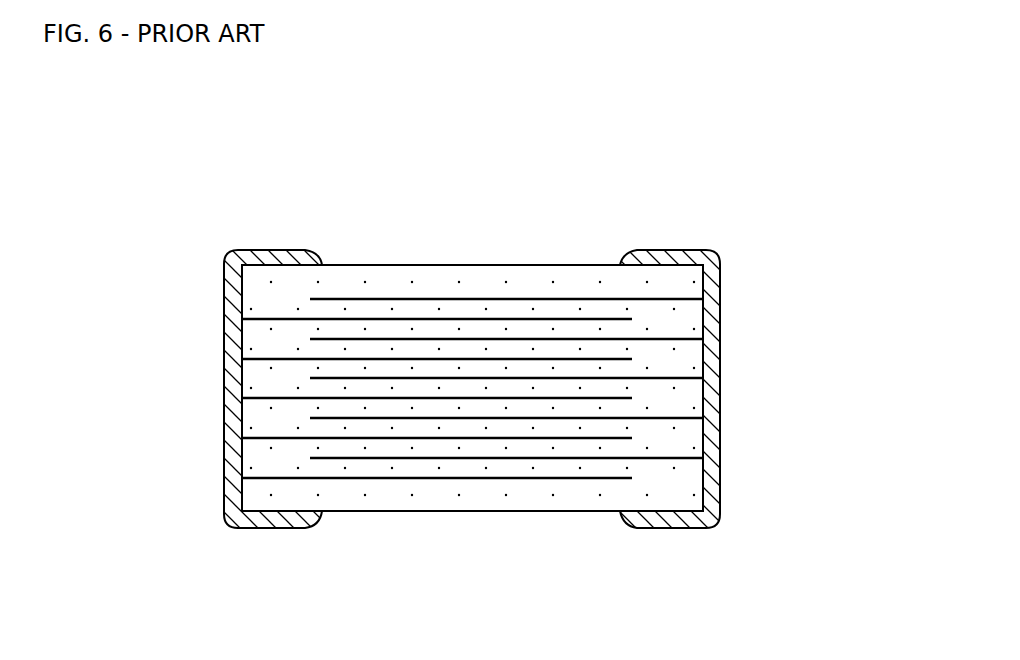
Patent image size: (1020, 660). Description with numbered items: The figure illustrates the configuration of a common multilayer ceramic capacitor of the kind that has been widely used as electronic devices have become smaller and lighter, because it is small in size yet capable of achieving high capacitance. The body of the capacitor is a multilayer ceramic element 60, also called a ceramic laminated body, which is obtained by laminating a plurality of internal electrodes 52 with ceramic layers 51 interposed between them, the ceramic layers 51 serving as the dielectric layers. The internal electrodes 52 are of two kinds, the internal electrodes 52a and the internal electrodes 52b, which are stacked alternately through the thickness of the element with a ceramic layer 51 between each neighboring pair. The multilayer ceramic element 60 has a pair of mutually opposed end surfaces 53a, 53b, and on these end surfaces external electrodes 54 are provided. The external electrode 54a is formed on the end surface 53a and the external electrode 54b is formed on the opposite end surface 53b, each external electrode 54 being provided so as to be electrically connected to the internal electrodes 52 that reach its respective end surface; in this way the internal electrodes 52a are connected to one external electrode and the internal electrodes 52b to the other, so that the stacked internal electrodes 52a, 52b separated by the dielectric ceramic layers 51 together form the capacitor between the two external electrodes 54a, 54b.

The multilayer ceramic element 60 is at (458, 259).
The ceramic layer 51 is at (585, 332).
The internal electrodes 52 is at (472, 373).
The internal electrode 52a is at (418, 357).
The internal electrode 52b is at (342, 418).
The end surface 53a is at (242, 345).
The end surface 53b is at (703, 314).
The external electrodes 54 is at (468, 389).
The external electrode 54a is at (226, 432).
The external electrode 54b is at (718, 408).